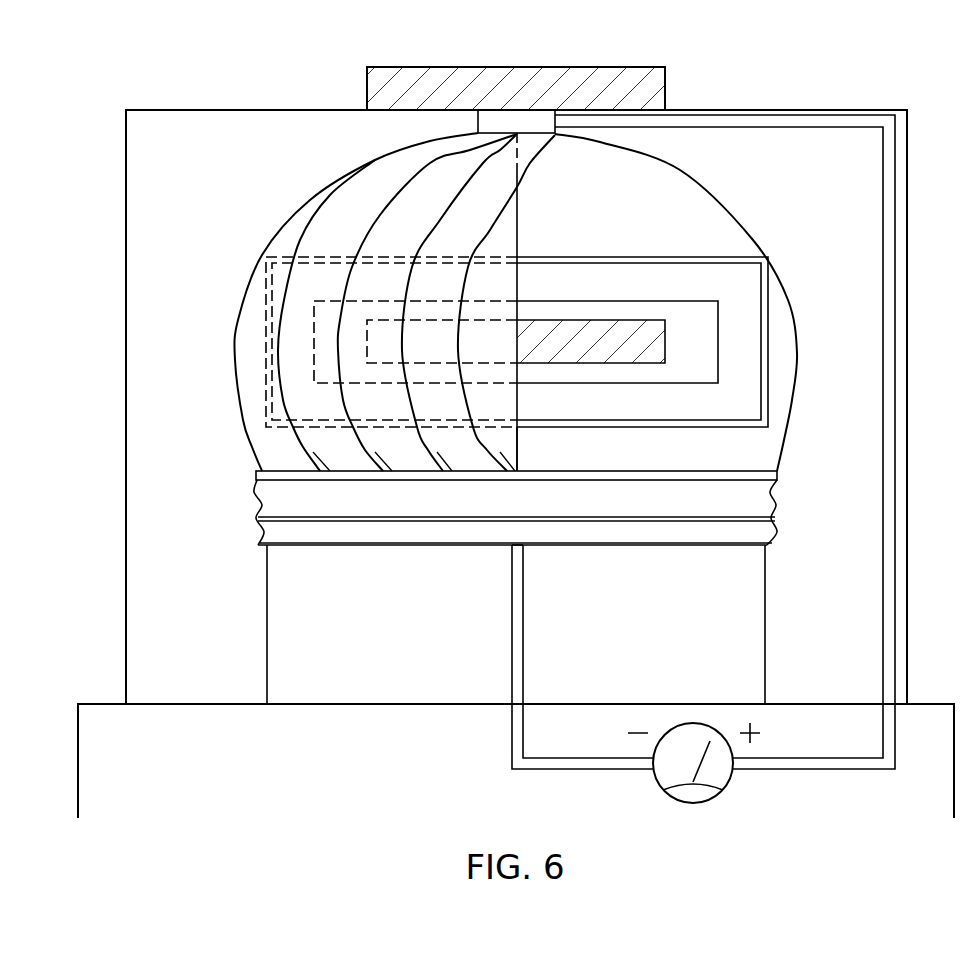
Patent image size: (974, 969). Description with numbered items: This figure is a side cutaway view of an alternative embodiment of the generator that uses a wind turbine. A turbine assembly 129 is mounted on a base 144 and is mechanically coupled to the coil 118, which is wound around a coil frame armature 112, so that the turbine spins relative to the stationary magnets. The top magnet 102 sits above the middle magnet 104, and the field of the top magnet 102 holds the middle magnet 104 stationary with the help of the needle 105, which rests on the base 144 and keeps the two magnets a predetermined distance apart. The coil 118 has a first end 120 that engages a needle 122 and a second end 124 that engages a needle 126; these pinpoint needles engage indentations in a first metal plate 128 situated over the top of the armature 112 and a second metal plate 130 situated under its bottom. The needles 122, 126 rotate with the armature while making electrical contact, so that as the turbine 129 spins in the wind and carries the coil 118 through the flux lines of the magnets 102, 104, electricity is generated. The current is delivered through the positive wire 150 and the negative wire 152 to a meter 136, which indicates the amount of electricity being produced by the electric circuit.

The second magnet 102 is at (645, 67).
The first magnet 104 is at (630, 330).
The needle 105 is at (518, 306).
The coil frame armature 112 is at (763, 278).
The coil 118 is at (658, 257).
The first end of coil wire 120 is at (519, 255).
The needle 122 is at (520, 200).
The second end of coil wire 124 is at (518, 423).
The needle 126 is at (518, 505).
The first metal plate 128 is at (512, 120).
The turbine assembly 129 is at (305, 215).
The second metal plate 130 is at (510, 544).
The meter 136 is at (693, 803).
The base 144 is at (88, 762).
The positive wire 150 is at (880, 590).
The negative wire 152 is at (523, 632).